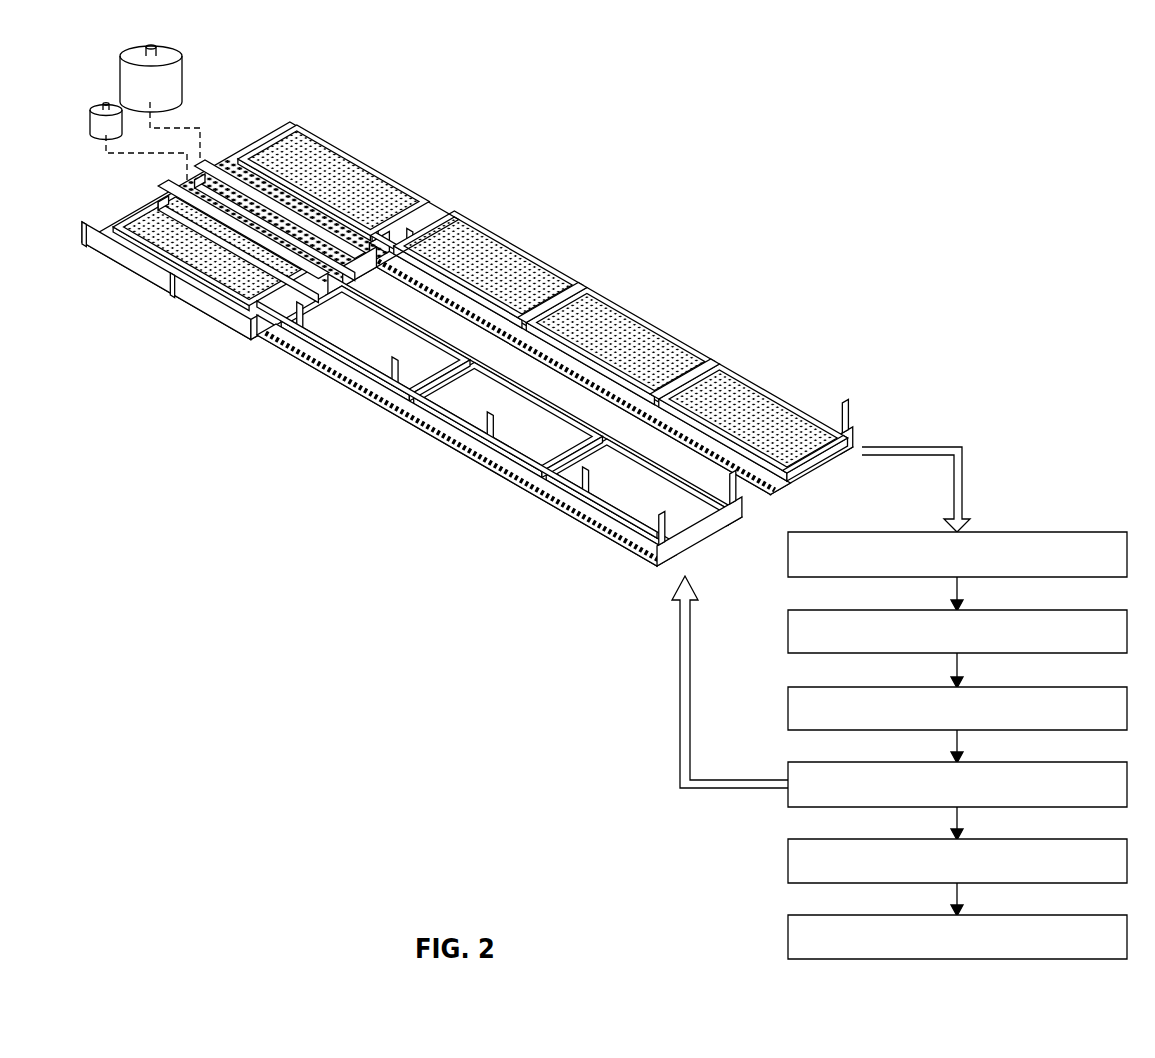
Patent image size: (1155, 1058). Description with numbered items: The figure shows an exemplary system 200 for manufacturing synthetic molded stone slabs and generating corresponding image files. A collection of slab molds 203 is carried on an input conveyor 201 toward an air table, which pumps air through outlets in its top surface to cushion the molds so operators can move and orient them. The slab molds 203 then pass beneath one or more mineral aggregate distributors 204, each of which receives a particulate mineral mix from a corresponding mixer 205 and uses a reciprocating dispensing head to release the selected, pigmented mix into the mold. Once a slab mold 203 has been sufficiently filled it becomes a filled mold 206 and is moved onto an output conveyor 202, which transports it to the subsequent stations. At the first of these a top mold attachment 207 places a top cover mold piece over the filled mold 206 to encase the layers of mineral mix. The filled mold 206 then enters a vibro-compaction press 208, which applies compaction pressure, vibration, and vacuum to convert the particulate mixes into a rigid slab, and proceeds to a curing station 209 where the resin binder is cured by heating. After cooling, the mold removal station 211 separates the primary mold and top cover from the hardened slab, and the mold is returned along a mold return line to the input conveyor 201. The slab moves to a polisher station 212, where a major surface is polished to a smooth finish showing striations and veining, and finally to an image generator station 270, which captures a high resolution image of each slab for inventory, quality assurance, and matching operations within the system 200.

The system 200 is at (784, 194).
The input conveyor 201 is at (706, 460).
The output conveyor 202 is at (818, 424).
The slab mold 203 is at (422, 332).
The mineral aggregate distributor 204 is at (160, 187).
The mixer 205 is at (184, 92).
The filled mold 206 is at (540, 263).
The top mold attachment 207 is at (787, 557).
The vibro-compaction press 208 is at (858, 609).
The curing station 209 is at (858, 686).
The mold removal station 211 is at (858, 761).
The polisher station 212 is at (858, 838).
The image generator station 270 is at (858, 914).